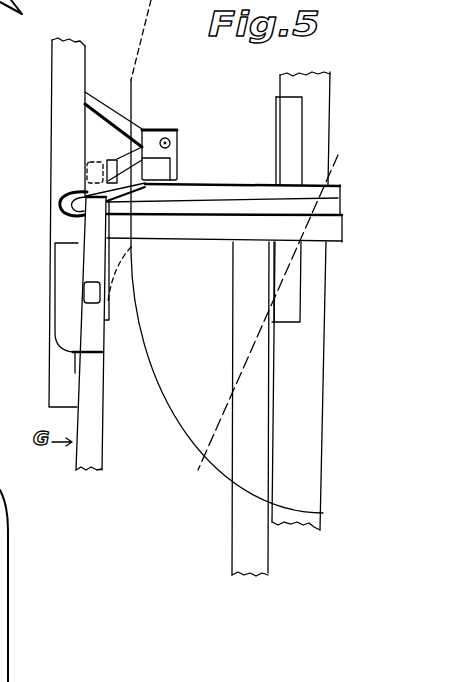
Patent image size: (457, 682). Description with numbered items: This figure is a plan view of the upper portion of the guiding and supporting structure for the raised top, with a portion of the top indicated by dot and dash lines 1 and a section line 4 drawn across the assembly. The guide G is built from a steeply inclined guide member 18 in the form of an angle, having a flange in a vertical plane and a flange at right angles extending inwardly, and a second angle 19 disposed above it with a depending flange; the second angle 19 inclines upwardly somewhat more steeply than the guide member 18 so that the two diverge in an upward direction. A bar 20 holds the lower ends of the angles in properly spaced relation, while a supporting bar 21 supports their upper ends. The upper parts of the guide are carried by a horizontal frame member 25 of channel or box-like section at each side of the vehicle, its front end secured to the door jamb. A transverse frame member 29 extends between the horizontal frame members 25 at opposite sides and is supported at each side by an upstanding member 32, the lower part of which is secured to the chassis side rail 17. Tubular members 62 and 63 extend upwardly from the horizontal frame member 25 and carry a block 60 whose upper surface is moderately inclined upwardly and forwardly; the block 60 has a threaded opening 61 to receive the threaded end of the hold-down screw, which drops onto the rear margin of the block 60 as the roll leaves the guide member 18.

The device 1 is at (148, 43).
The section line 4 is at (255, 321).
The chassis side rail 17 is at (300, 523).
The guide member 18 is at (80, 232).
The second angle 19 is at (92, 441).
The bar 20 is at (0, 613).
The supporting bar 21 is at (58, 275).
The horizontal frame member 25 is at (62, 83).
The transverse frame member 29 is at (198, 232).
The upstanding member 32 is at (285, 302).
The block 60 is at (178, 135).
The threaded opening 61 is at (164, 138).
The tubular member 62 is at (100, 100).
The tubular member 63 is at (70, 193).